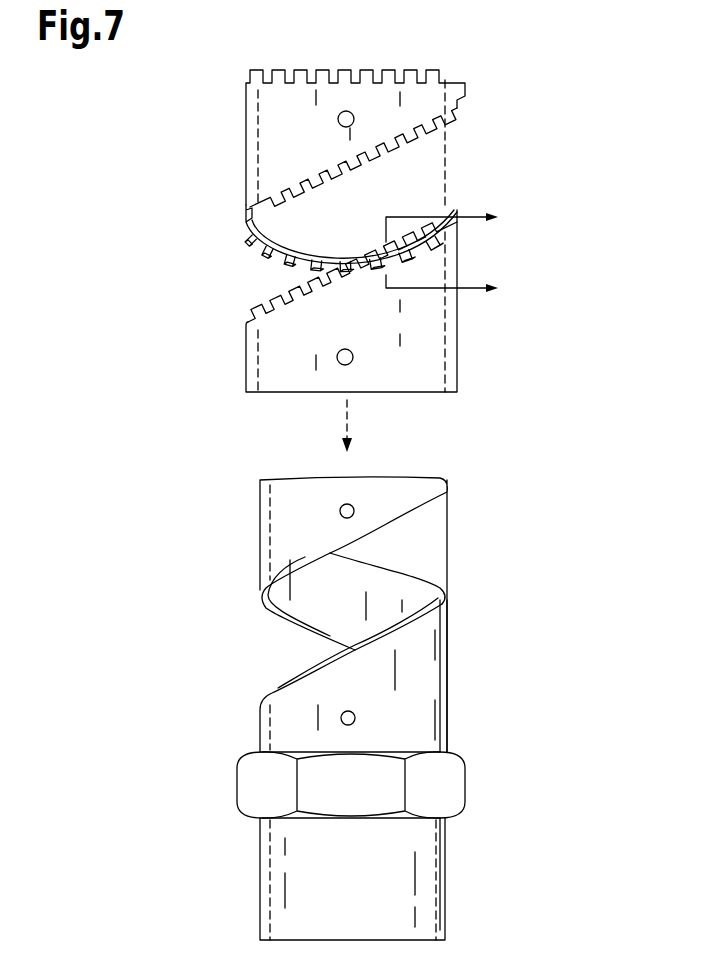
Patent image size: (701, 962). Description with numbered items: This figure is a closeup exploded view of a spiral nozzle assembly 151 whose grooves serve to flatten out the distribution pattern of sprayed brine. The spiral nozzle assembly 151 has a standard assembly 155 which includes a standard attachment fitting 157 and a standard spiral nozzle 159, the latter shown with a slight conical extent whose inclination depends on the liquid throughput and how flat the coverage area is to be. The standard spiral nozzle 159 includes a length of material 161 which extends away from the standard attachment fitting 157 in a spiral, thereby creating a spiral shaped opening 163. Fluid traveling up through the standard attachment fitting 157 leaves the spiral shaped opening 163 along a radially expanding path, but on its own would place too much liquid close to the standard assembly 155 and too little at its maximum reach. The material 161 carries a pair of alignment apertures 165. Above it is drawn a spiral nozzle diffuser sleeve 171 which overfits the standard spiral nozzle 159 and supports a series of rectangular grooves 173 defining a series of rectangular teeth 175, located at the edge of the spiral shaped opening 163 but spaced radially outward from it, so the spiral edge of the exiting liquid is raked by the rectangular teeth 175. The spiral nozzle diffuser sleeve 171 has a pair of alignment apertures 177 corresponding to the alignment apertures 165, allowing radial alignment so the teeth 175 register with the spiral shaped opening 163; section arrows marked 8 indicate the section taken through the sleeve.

The spiral nozzle assembly 151 is at (160, 132).
The spiral nozzle diffuser sleeve 171 is at (210, 392).
The rectangular grooves 173 is at (300, 272).
The rectangular teeth 175 is at (292, 298).
The alignment apertures 177 is at (347, 110).
The section line 8- 8 is at (453, 253).
The standard assembly 155 is at (493, 950).
The standard attachment fitting 157 is at (203, 758).
The standard spiral nozzle 159 is at (200, 750).
The length of material 161 is at (447, 643).
The spiral shaped opening 163 is at (255, 608).
The alignment apertures 165 is at (350, 504).